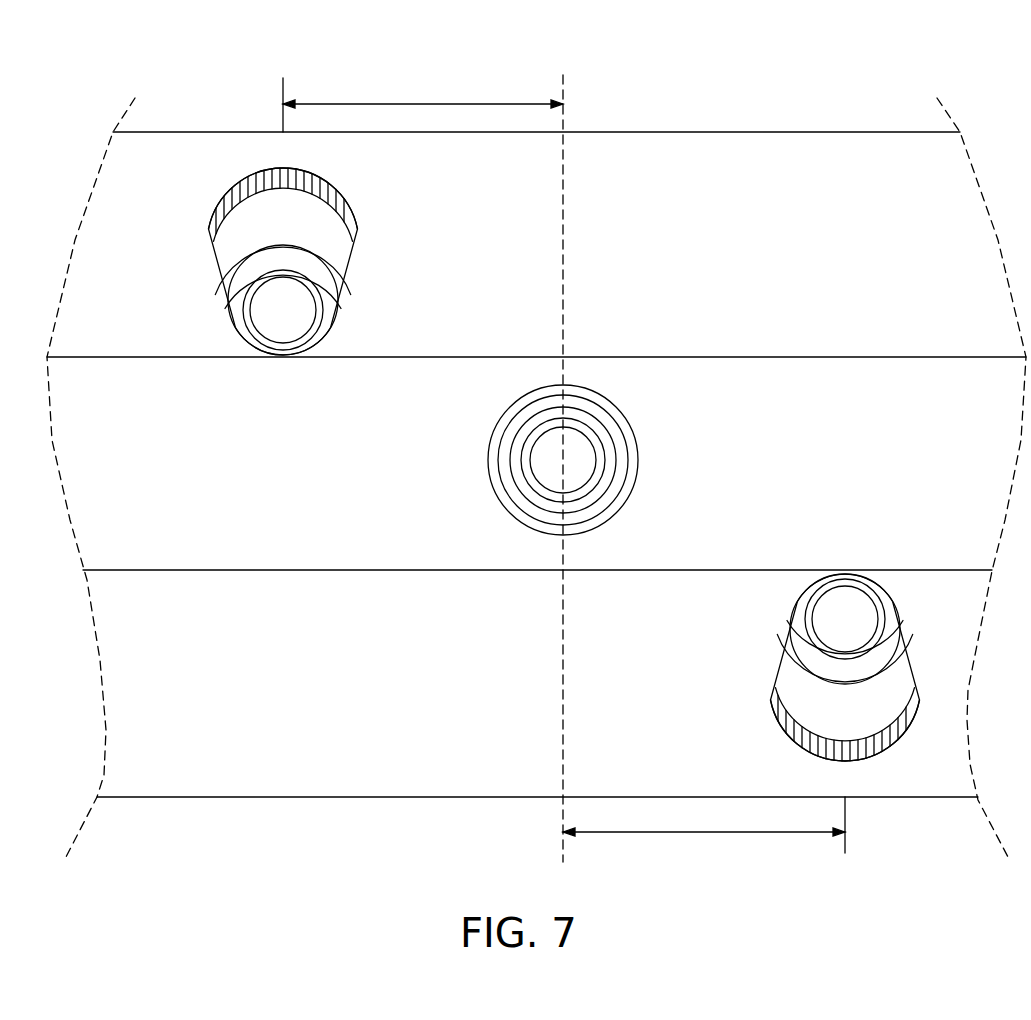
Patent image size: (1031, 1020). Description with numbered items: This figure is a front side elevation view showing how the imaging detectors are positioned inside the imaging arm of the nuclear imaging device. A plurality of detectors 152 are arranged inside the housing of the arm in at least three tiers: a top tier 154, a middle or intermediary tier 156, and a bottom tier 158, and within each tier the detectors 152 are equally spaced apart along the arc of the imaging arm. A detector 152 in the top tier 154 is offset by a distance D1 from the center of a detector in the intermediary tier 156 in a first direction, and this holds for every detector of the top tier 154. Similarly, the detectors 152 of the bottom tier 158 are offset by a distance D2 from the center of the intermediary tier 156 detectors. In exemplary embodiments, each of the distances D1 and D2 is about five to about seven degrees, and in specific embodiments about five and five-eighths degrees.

The detector 152 is at (363, 251).
The top tier 154 is at (812, 248).
The intermediary tier 156 is at (812, 446).
The bottom tier 158 is at (318, 705).
The distance D1 is at (395, 104).
The distance D2 is at (728, 832).